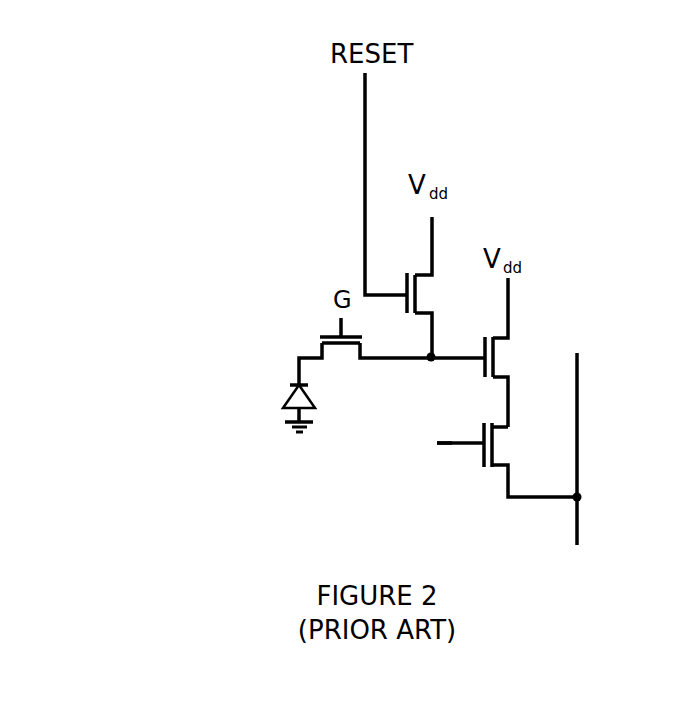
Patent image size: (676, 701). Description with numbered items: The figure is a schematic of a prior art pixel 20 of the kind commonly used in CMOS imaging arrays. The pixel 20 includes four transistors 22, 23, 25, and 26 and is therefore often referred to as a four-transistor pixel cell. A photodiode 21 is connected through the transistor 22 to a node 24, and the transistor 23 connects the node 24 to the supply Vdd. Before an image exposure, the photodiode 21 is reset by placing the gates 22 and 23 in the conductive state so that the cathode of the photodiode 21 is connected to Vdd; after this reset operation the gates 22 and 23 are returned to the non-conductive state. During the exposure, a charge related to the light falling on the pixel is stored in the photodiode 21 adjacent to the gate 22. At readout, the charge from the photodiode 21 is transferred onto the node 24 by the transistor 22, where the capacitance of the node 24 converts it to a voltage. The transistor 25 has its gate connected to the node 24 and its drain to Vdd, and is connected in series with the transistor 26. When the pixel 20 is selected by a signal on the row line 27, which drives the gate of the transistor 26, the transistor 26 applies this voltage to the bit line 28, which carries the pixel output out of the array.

The pixel 20 is at (128, 66).
The photodiode 21 is at (305, 388).
The transistor 22 is at (323, 335).
The transistor 23 is at (406, 276).
The node 24 is at (426, 360).
The transistor 25 is at (497, 376).
The transistor 26 is at (500, 462).
The row line 27 is at (452, 445).
The bit line 28 is at (580, 385).